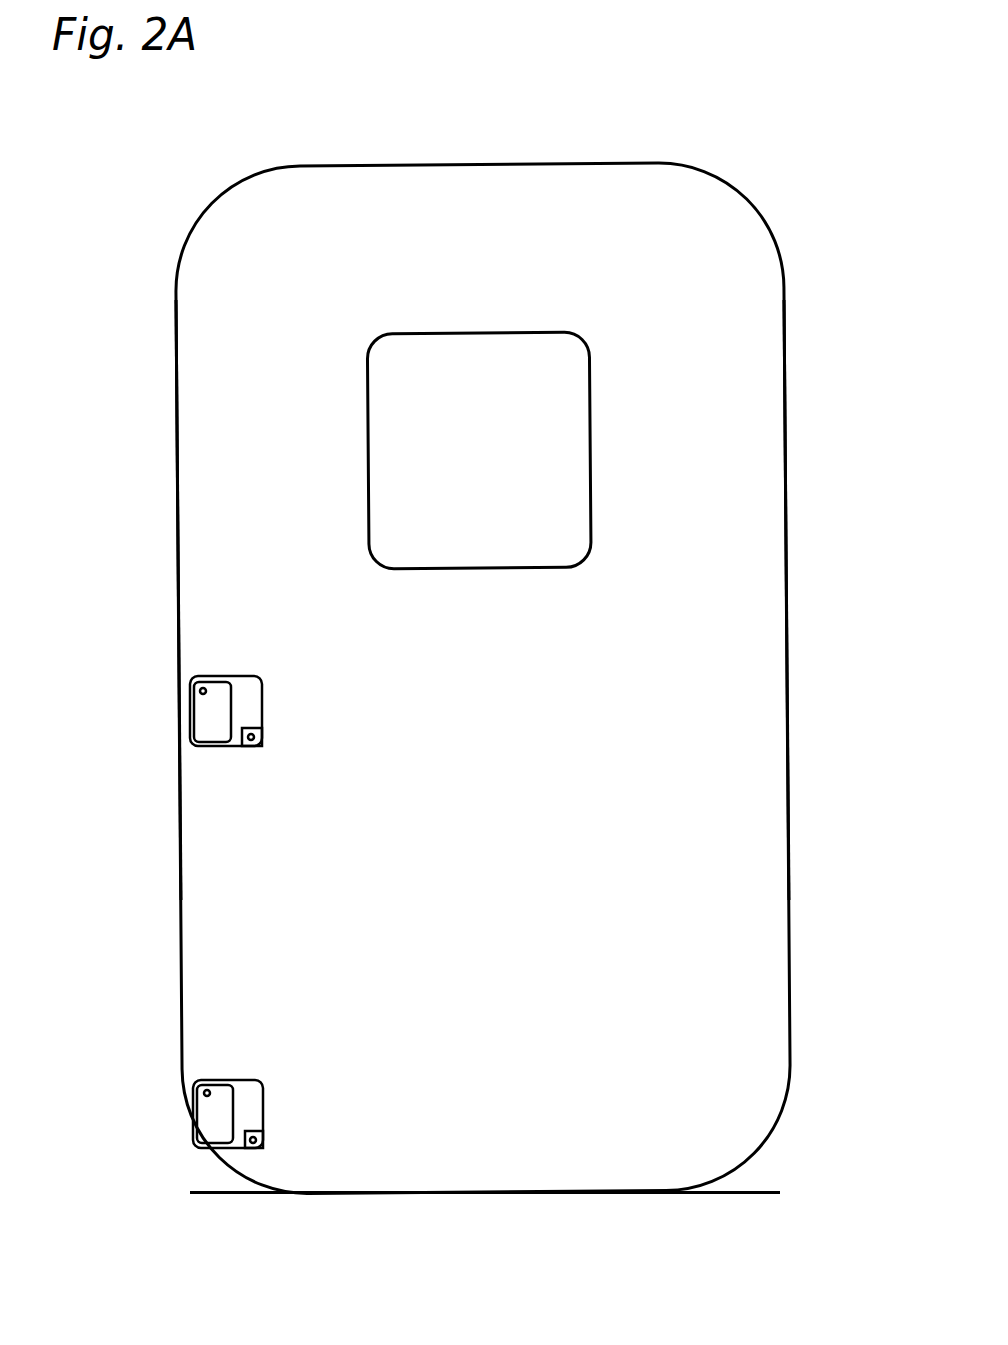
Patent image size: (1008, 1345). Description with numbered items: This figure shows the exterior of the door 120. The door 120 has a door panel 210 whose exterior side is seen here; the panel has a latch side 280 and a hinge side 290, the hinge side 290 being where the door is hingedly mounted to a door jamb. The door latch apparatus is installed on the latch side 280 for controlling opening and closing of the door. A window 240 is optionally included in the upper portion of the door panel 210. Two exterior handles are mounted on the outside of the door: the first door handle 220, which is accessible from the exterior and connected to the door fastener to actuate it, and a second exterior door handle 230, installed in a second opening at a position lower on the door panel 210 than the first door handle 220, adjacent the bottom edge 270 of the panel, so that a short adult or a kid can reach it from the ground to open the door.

The door 120 is at (485, 651).
The door panel 210 is at (732, 347).
The first door handle 220 is at (212, 677).
The second exterior door handle 230 is at (217, 1078).
The window 240 is at (513, 332).
The bottom edge 270 is at (403, 1194).
The latch side 280 is at (174, 403).
The hinge side 290 is at (785, 418).